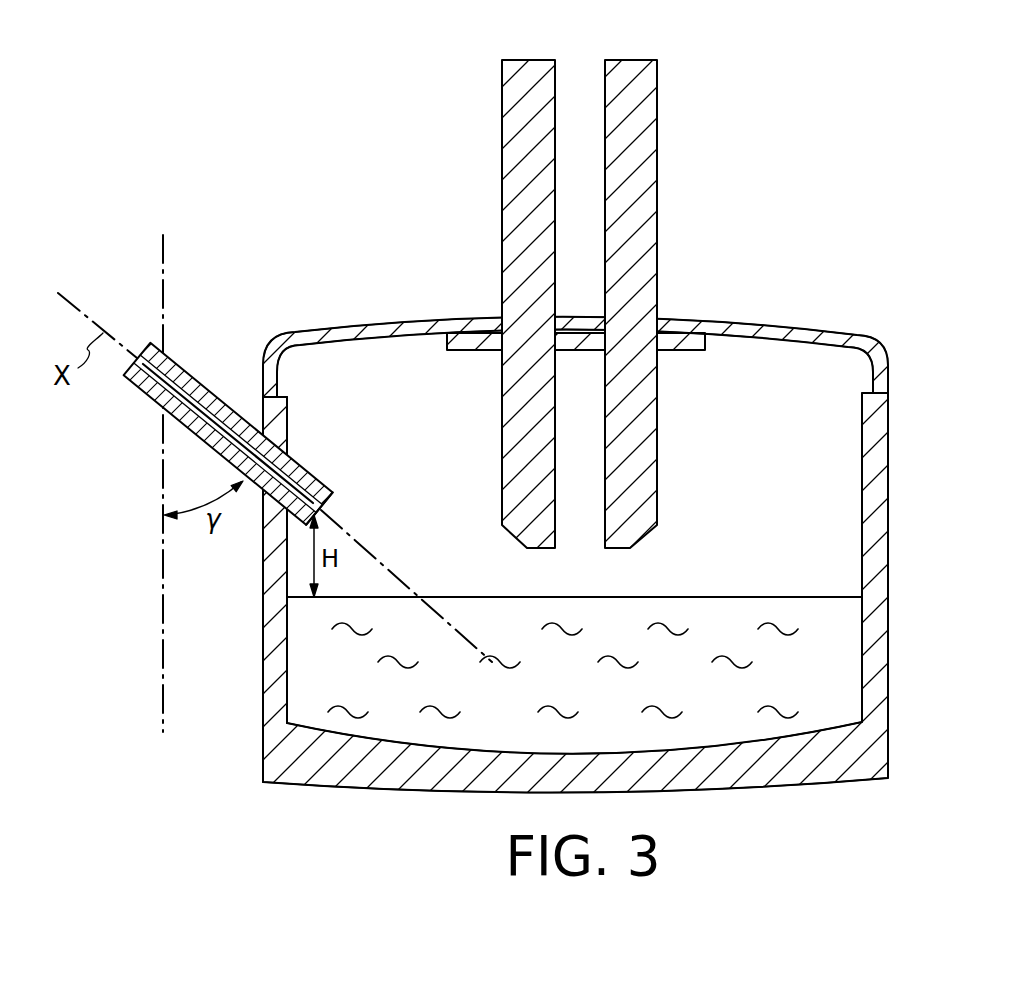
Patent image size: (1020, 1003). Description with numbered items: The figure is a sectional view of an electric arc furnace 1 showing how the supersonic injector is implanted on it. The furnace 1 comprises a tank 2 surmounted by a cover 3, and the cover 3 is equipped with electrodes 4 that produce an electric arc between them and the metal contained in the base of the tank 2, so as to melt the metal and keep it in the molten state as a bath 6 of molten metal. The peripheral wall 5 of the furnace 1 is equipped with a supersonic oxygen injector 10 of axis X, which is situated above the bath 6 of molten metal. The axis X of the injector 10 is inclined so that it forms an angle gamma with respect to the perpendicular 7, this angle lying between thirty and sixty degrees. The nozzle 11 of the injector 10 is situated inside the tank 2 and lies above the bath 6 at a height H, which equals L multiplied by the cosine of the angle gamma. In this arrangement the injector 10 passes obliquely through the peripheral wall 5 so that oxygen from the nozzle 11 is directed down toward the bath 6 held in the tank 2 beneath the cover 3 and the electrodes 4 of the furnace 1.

The electric arc furnace 1 is at (544, 441).
The tank 2 is at (749, 805).
The cover 3 is at (720, 320).
The electrodes 4 is at (541, 60).
The peripheral wall 5 is at (263, 652).
The bath of molten metal 6 is at (545, 682).
The perpendicular 7 is at (163, 572).
The supersonic oxygen injector 10 is at (127, 414).
The nozzle 11 is at (318, 513).